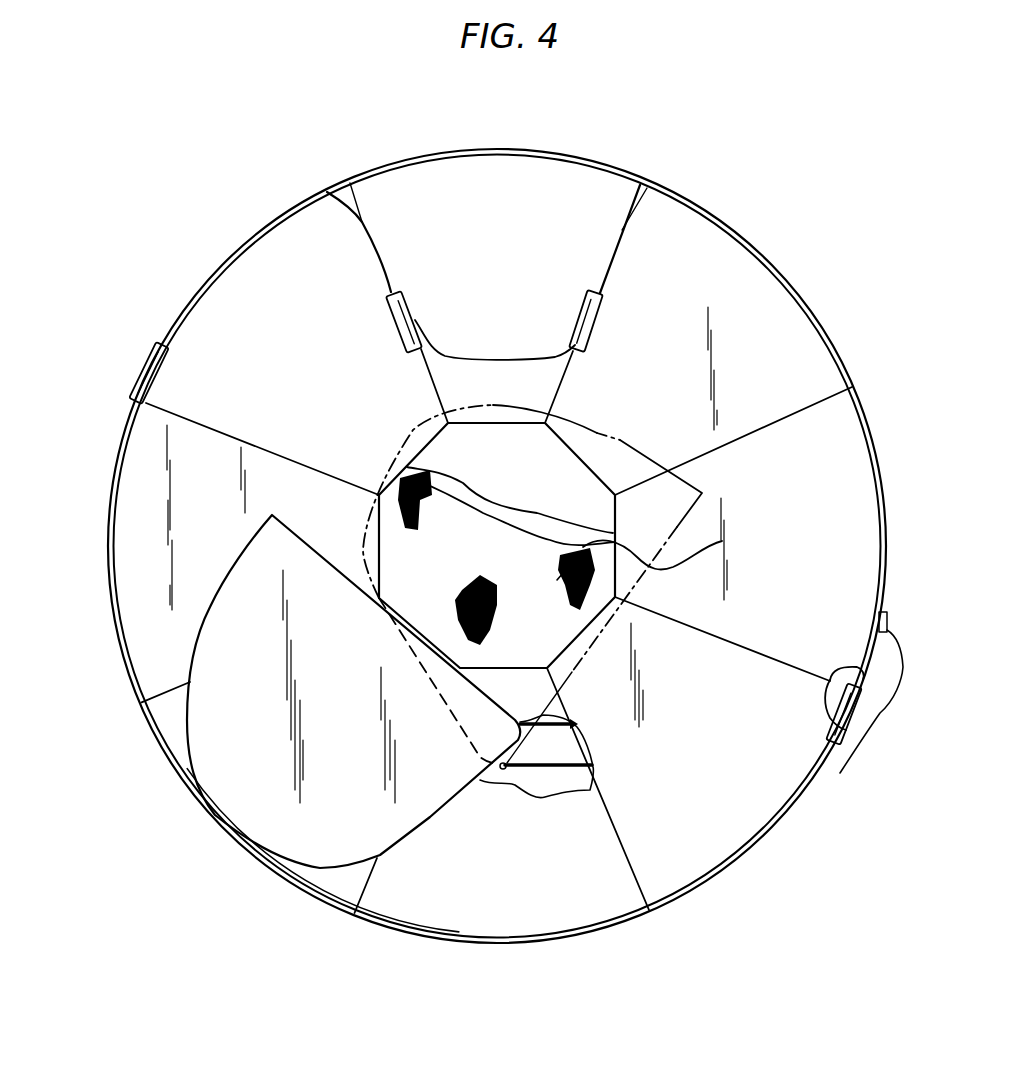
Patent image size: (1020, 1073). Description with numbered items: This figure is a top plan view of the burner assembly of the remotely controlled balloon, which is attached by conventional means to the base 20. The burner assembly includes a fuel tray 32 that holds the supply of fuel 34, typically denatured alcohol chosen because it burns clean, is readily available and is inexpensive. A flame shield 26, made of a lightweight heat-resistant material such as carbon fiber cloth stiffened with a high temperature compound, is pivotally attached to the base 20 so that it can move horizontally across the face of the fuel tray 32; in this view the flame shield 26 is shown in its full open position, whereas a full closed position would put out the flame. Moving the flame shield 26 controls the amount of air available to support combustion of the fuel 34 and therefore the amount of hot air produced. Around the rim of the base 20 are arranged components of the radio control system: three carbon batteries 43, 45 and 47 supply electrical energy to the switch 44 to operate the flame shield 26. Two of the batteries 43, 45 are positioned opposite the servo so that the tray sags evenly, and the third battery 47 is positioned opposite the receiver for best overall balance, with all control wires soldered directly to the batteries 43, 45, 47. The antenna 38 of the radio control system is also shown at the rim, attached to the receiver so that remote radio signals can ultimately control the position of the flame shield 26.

The base 20 is at (136, 737).
The flame shield 26 is at (247, 792).
The fuel tray 32 is at (580, 456).
The supply of fuel 34 is at (722, 541).
The antenna 38 is at (820, 733).
The battery 43 is at (397, 323).
The switch 44 is at (840, 773).
The battery 45 is at (600, 313).
The battery 47 is at (156, 347).